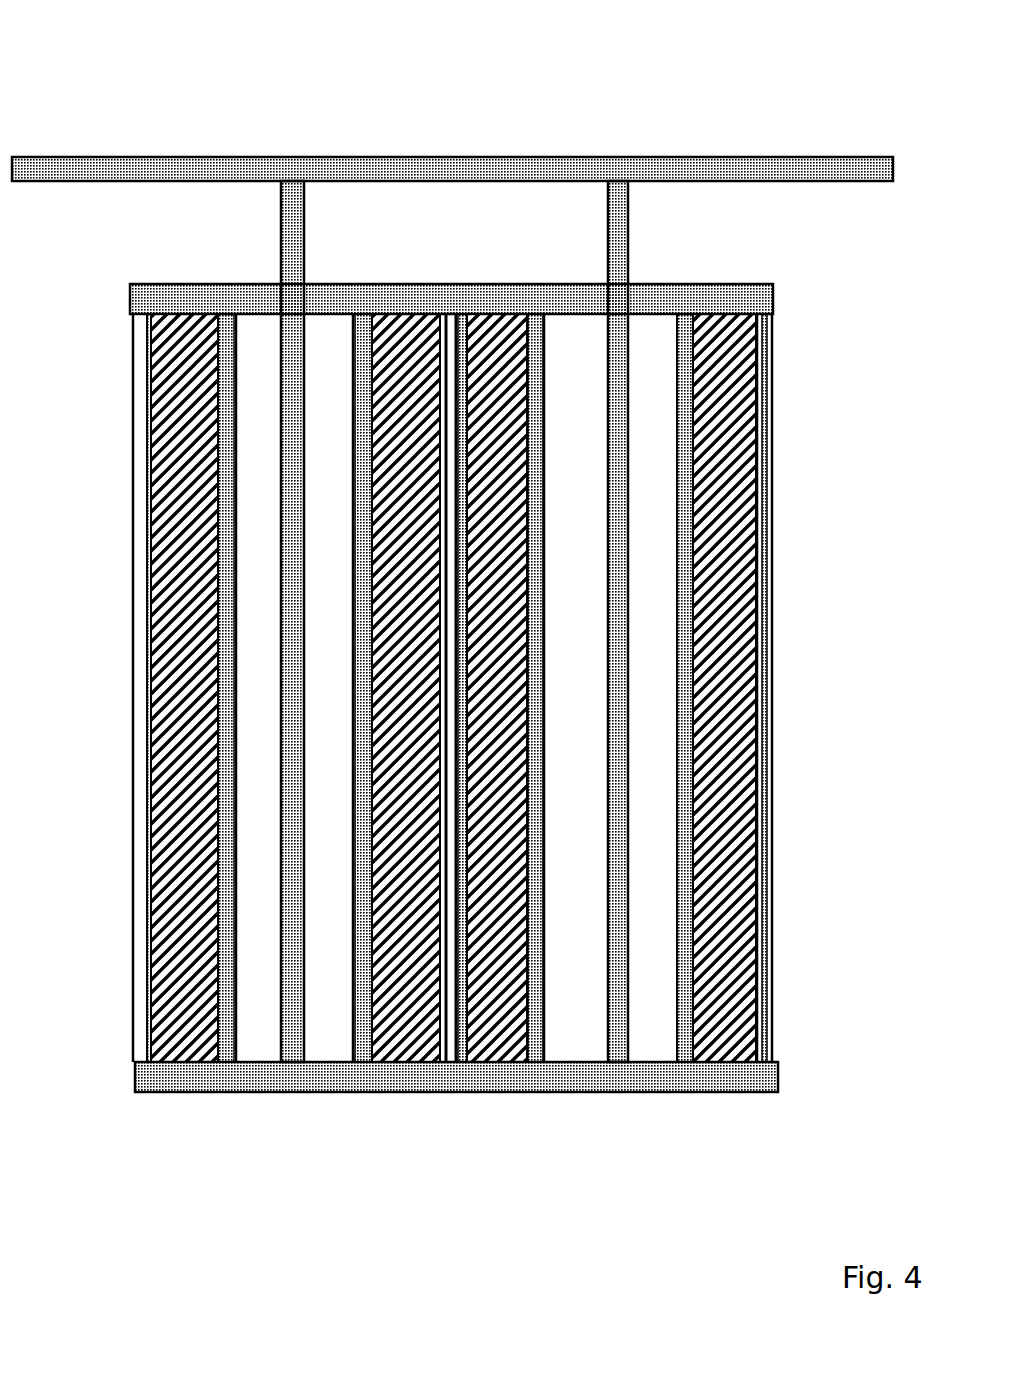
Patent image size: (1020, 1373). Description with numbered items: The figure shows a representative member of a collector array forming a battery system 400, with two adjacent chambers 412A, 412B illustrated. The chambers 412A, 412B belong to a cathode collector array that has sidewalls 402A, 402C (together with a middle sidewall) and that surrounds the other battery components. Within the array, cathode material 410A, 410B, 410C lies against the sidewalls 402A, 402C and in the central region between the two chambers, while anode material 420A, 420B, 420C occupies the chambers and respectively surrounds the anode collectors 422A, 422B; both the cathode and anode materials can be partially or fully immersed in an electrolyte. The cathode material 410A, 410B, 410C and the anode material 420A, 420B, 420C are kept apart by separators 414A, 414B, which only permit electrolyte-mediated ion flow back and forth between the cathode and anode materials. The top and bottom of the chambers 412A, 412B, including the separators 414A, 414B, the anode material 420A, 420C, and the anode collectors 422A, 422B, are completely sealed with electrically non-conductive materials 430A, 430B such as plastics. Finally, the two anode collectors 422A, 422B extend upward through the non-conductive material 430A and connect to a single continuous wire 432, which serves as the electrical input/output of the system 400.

The system 400 is at (125, 84).
The single continuous wire 432 is at (760, 157).
The electrically non-conductive material 430A is at (126, 297).
The electrically non-conductive material 430B is at (134, 1081).
The anode collector 422A is at (304, 265).
The anode collector 422B is at (630, 262).
The sidewall 402A is at (133, 626).
The sidewall 402C is at (782, 634).
The cathode material 410A is at (188, 365).
The cathode material 410B is at (517, 333).
The cathode material 410C is at (737, 352).
The separator 414A is at (352, 982).
The separator 414B is at (541, 980).
The anode material 420A is at (263, 1027).
The anode material 420B is at (490, 1035).
The anode material 420C is at (659, 1033).
The chamber 412A is at (273, 1125).
The chamber 412B is at (670, 1110).